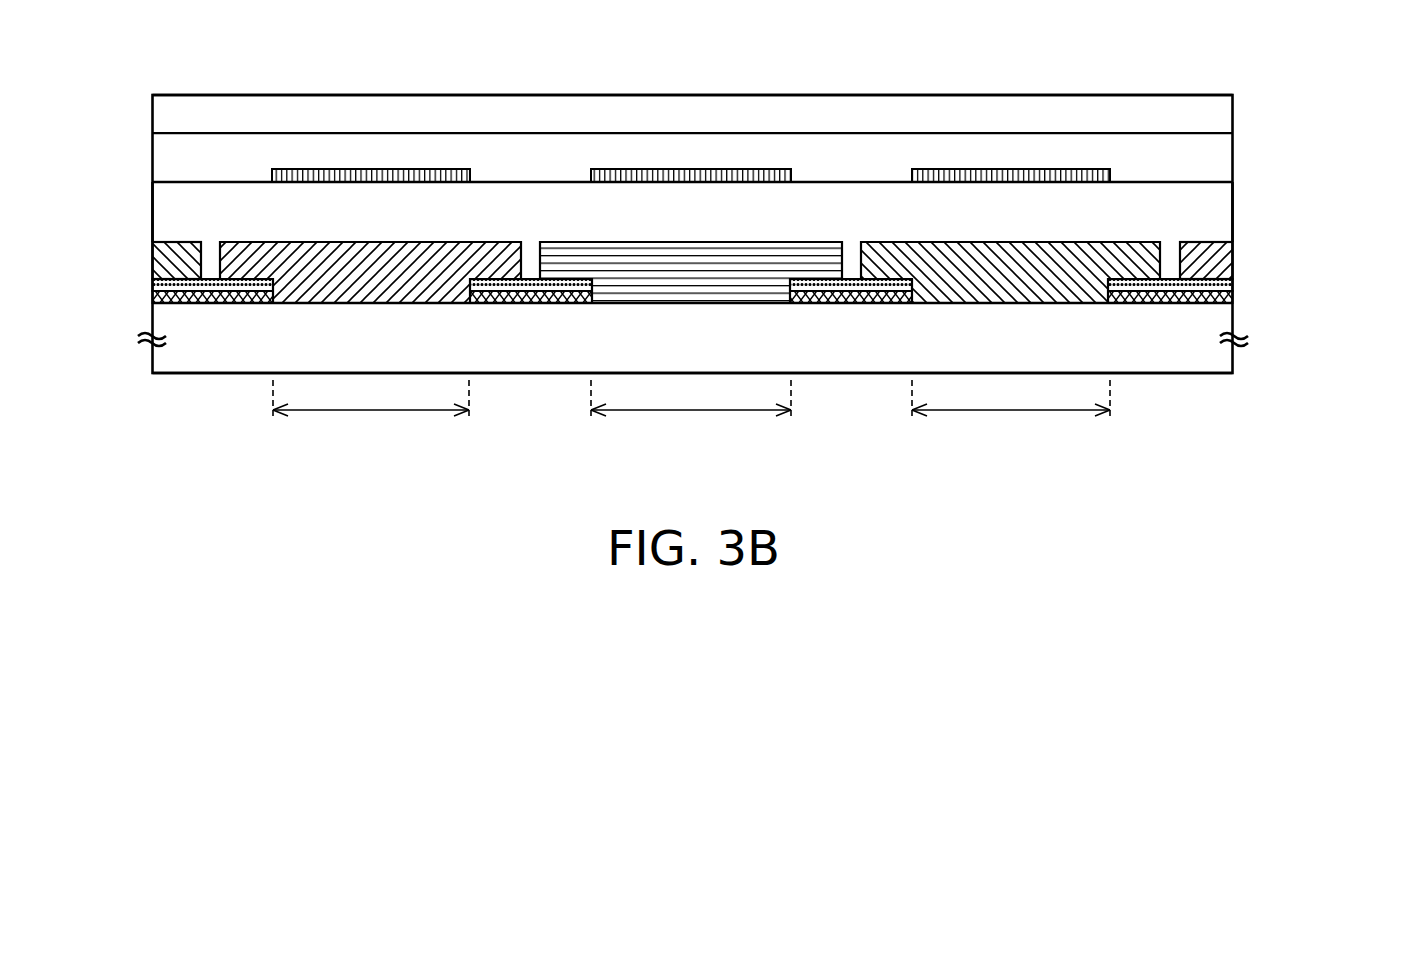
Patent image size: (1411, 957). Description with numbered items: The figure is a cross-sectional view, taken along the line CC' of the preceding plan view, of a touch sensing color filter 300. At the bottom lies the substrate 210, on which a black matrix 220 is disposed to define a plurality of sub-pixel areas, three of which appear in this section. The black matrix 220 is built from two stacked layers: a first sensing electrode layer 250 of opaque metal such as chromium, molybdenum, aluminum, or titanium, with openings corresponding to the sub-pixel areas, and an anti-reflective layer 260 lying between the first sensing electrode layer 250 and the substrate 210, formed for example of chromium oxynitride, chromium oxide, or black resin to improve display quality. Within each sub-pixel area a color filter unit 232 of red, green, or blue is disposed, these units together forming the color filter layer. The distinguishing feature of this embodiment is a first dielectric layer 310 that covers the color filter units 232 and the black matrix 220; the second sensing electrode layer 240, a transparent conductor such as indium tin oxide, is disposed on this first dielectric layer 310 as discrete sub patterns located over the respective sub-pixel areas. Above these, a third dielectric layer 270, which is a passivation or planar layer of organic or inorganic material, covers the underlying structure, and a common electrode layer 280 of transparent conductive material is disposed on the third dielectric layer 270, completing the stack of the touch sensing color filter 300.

The touch sensing color filter 300 is at (712, 275).
The common electrode layer 280 is at (1225, 112).
The third dielectric layer 270 is at (1222, 150).
The second sensing electrode layer 240 is at (1110, 176).
The first dielectric layer 310 is at (158, 213).
The color filter unit 232 is at (1235, 257).
The black matrix 220 is at (772, 288).
The first sensing electrode layer 250 is at (1230, 283).
The anti-reflective layer 260 is at (1233, 300).
The substrate 210 is at (1221, 358).